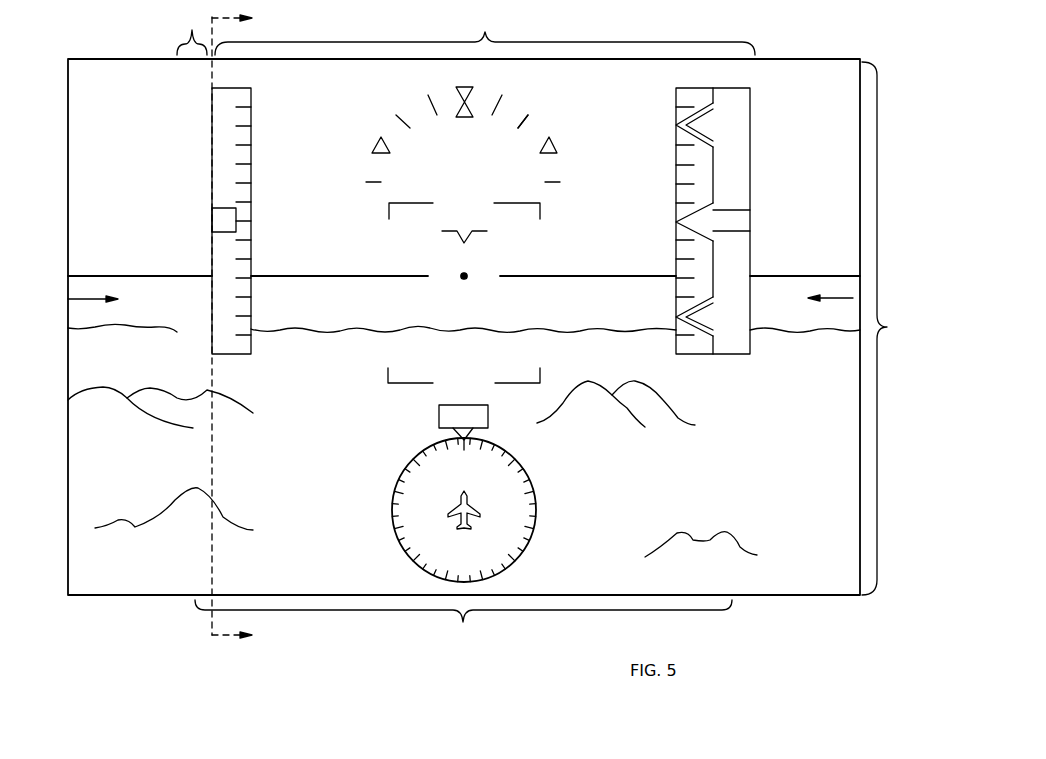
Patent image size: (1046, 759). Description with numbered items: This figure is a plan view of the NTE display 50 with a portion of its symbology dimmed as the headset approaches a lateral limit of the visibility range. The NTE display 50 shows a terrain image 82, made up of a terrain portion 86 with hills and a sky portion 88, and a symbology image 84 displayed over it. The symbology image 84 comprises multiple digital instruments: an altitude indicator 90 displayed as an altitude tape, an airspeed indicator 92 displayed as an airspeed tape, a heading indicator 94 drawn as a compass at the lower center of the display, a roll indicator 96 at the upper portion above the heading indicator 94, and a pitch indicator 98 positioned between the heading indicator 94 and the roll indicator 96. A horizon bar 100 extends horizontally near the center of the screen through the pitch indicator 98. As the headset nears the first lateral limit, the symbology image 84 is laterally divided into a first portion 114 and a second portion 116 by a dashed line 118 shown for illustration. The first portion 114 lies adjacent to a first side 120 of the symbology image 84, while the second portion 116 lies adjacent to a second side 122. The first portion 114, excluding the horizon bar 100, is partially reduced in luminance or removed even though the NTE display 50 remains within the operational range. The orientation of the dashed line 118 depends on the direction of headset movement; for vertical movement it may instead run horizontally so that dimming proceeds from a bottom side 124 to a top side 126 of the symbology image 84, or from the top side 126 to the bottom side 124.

The NTE display 50 is at (95, 58).
The terrain image 82 is at (887, 328).
The symbology image 84 is at (463, 623).
The terrain portion 86 is at (834, 404).
The sky portion 88 is at (838, 120).
The altitude indicator 90 is at (676, 138).
The airspeed indicator 92 is at (251, 141).
The heading indicator 94 is at (400, 482).
The roll indicator 96 is at (392, 125).
The pitch indicator 98 is at (505, 224).
The horizon bar 100 is at (820, 276).
The first portion 114 is at (192, 30).
The second portion 116 is at (485, 33).
The dashed line 118 is at (212, 18).
The first side 120 is at (68, 299).
The second side 122 is at (853, 298).
The bottom side 124 is at (530, 567).
The top side 126 is at (568, 114).